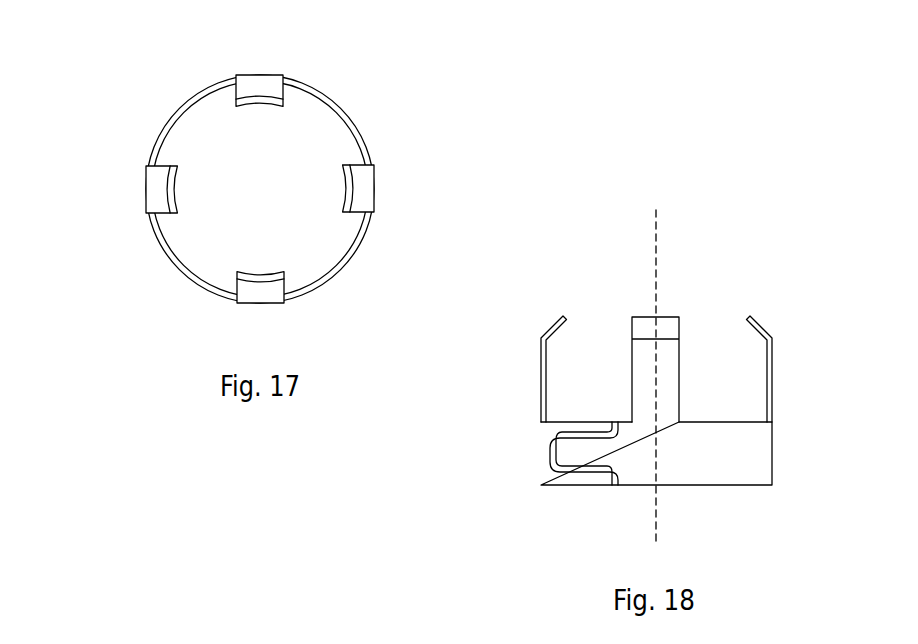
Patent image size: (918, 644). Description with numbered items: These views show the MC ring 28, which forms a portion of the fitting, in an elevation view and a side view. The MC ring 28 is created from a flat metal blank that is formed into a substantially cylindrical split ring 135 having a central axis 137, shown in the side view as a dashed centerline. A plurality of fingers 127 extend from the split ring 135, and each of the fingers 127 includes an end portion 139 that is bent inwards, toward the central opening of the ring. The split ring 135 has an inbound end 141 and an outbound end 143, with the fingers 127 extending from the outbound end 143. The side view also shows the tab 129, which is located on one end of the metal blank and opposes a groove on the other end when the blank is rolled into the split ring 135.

In FIG. 17, the MC ring 28 is at (268, 187).
In FIG. 18, the MC ring 28 is at (607, 386).
In FIG. 17, the split ring 135 is at (343, 108).
In FIG. 17, the fingers 127 is at (258, 292).
In FIG. 18, the fingers 127 is at (541, 382).
In FIG. 18, the central axis 137 is at (656, 242).
In FIG. 18, the end portions 139 is at (758, 329).
In FIG. 18, the inbound end 141 is at (723, 485).
In FIG. 18, the outbound end 143 is at (718, 422).
In FIG. 18, the tab 129 is at (578, 453).